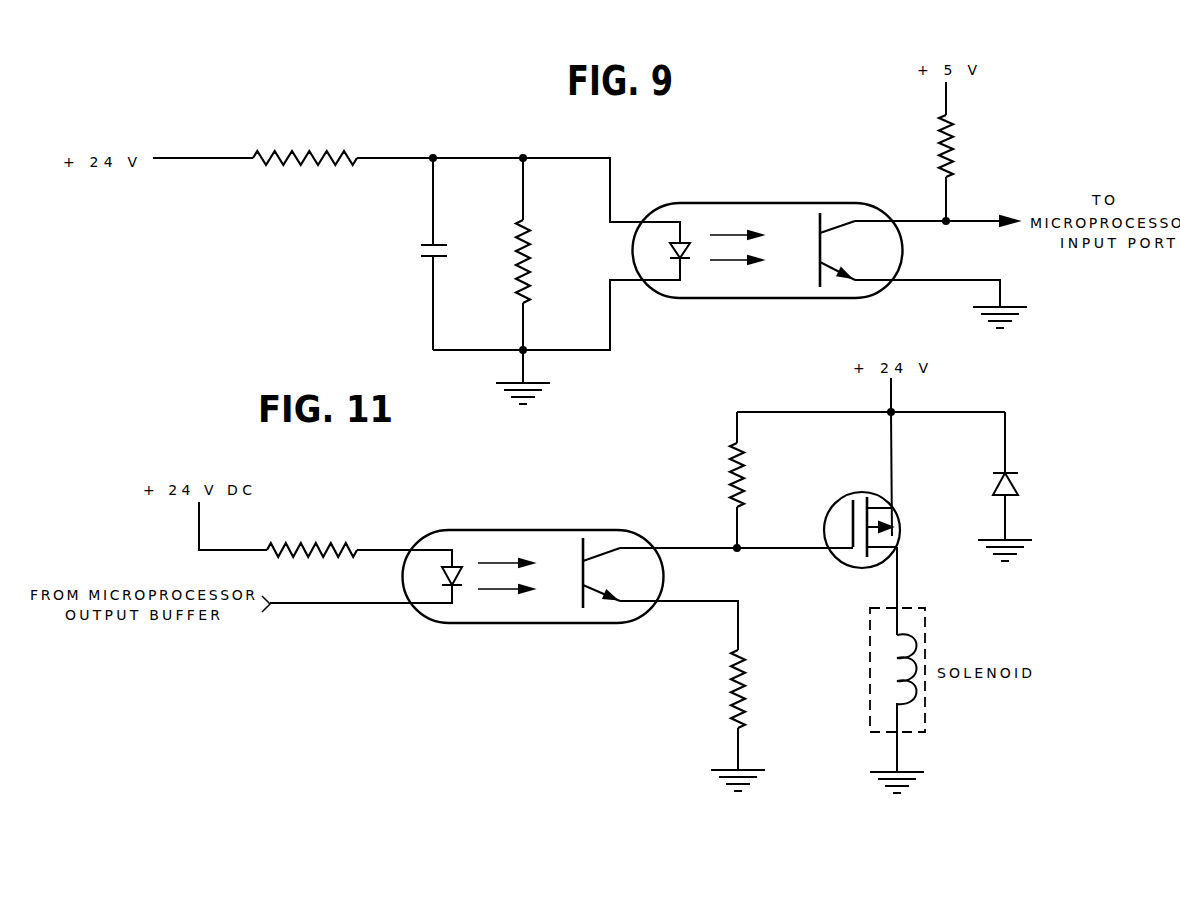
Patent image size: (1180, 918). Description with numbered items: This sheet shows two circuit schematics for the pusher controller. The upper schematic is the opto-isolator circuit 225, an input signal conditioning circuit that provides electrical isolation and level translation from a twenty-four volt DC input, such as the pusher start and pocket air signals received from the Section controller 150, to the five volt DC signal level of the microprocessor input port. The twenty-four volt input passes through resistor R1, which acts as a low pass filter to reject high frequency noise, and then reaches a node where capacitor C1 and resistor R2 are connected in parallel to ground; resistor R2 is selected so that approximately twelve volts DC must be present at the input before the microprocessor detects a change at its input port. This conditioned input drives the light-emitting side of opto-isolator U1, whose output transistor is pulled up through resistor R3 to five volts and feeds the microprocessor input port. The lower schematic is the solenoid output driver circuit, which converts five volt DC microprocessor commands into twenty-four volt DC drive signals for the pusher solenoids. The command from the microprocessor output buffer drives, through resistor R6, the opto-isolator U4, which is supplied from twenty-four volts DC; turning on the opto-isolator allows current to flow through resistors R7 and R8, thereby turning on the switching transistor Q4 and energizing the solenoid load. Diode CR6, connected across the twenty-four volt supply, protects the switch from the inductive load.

In FIG. 9, the opto-isolator circuit 225 is at (360, 287).
In FIG. 11, the Section controller 150 is at (603, 661).
In FIG. 9, the resistor R1 is at (305, 145).
In FIG. 9, the capacitor C1 is at (415, 254).
In FIG. 9, the resistor R2 is at (540, 270).
In FIG. 9, the optocoupler U1 is at (768, 238).
In FIG. 9, the pull-up resistor R3 is at (961, 151).
In FIG. 11, the resistor R6 is at (312, 538).
In FIG. 11, the optocoupler U4 is at (533, 566).
In FIG. 11, the resistor R7 is at (721, 480).
In FIG. 11, the resistor R8 is at (721, 710).
In FIG. 11, the MOSFET Q4 is at (853, 490).
In FIG. 11, the diode CR6 is at (1029, 476).